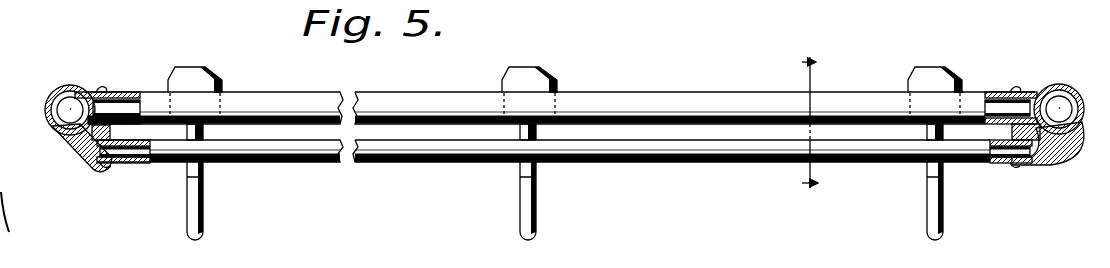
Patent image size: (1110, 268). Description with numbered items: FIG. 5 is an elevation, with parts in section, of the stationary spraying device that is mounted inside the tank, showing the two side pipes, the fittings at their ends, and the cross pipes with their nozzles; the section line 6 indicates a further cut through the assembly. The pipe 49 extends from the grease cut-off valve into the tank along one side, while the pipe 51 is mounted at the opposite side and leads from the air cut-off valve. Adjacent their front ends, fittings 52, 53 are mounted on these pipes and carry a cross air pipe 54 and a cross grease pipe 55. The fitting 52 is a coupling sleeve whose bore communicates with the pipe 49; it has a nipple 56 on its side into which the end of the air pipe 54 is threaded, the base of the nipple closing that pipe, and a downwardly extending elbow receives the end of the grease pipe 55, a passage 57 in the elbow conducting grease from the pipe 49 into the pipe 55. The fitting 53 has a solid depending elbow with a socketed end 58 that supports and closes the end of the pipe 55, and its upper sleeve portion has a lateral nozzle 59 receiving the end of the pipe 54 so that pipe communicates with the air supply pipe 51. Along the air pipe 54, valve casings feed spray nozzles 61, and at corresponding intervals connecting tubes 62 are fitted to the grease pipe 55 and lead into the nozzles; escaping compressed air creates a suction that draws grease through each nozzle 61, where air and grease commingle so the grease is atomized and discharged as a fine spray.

The section line 6- 6 is at (809, 126).
The pipe 49 is at (1058, 100).
The pipe 51 is at (57, 87).
The fitting 52 is at (1047, 160).
The fitting 53 is at (77, 156).
The cross air pipe 54 is at (683, 91).
The cross grease pipe 55 is at (720, 163).
The nipple 56 is at (1010, 85).
The passage 57 is at (1042, 148).
The socketed end 58 is at (103, 167).
The lateral nozzle 59 is at (92, 84).
The spray nozzle 61 is at (222, 88).
The connecting tube 62 is at (207, 207).